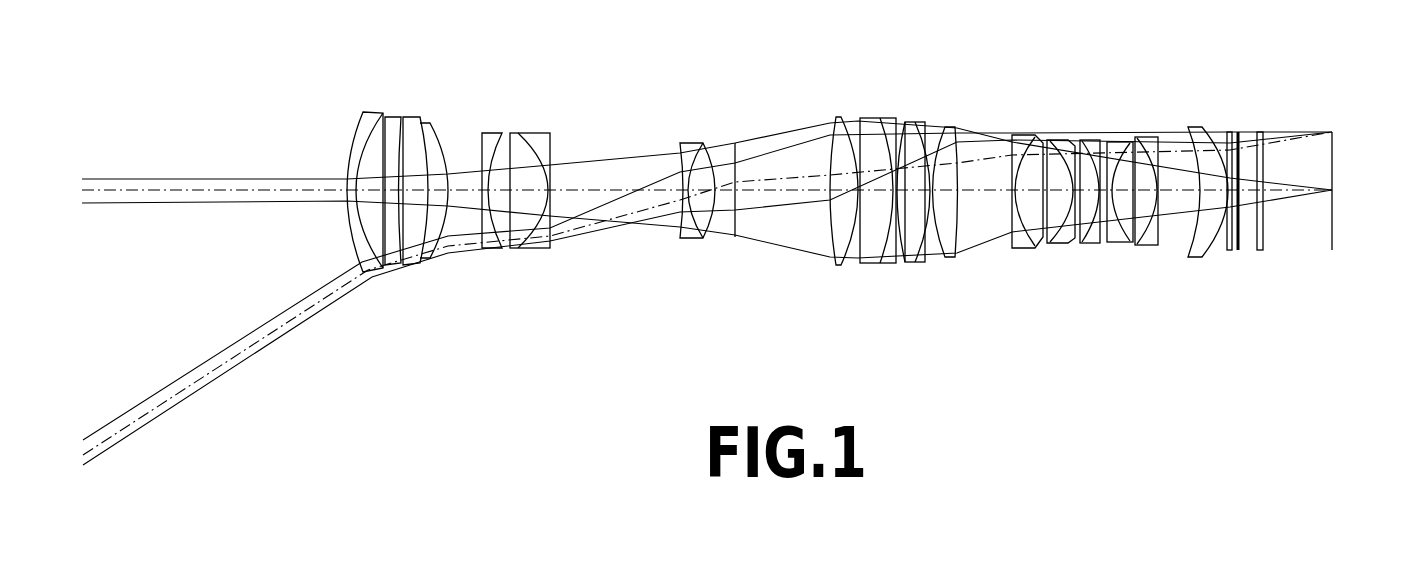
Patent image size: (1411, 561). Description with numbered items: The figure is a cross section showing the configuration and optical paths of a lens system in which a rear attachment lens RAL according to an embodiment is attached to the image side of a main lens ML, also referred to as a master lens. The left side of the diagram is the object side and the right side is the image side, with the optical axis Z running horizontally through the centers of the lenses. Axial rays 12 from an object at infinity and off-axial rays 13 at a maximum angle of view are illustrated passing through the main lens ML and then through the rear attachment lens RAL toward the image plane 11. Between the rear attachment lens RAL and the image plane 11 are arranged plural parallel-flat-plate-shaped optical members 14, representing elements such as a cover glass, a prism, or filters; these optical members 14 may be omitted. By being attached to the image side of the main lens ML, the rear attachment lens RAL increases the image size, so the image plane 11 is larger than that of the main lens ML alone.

The image plane 11 is at (1332, 235).
The axial rays 12 is at (76, 163).
The off-axial rays 13 is at (76, 425).
The parallel-flat-plate-shaped optical members 14 is at (1263, 290).
The optical axis Z is at (168, 188).
The main lens ML is at (957, 73).
The rear attachment lens RAL is at (1228, 73).